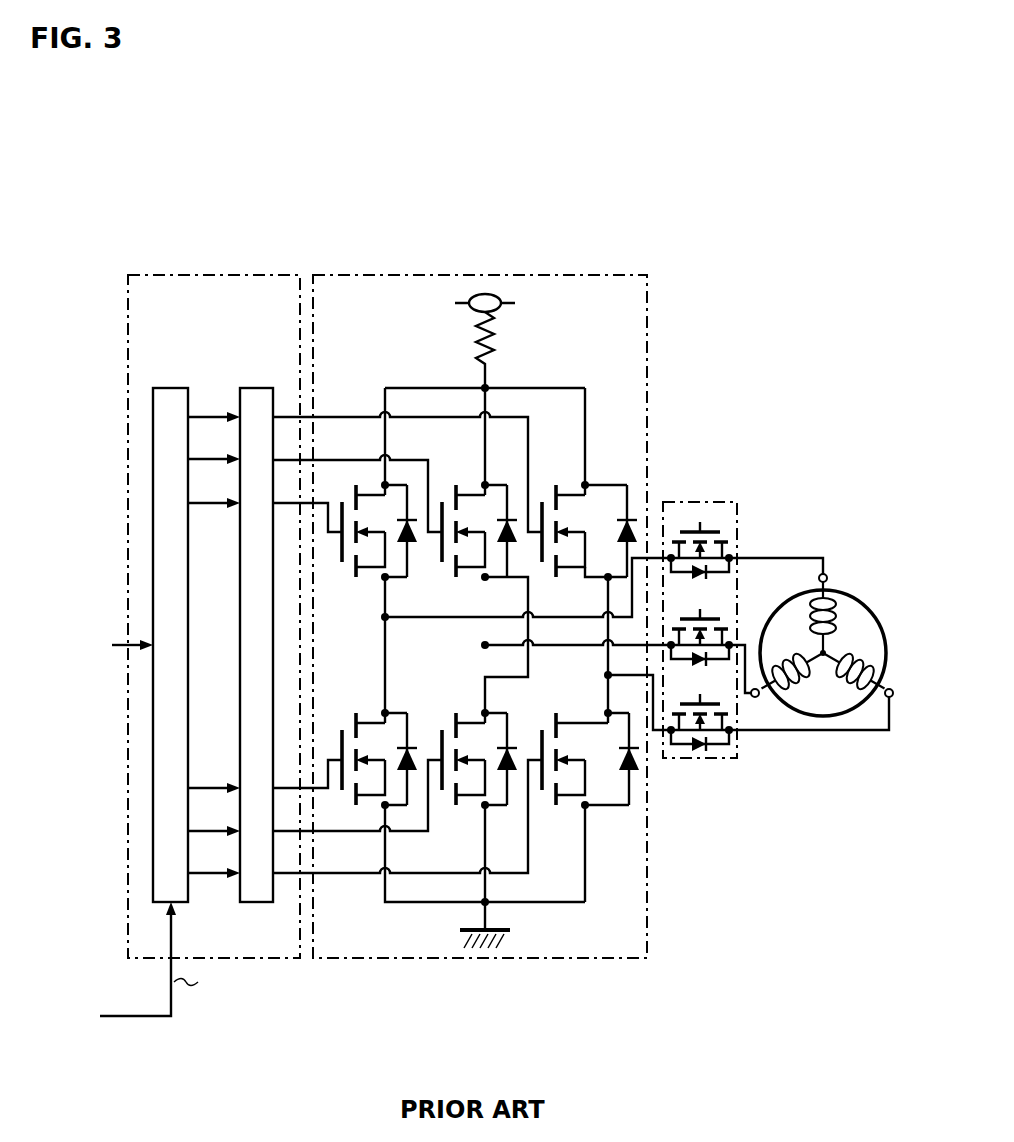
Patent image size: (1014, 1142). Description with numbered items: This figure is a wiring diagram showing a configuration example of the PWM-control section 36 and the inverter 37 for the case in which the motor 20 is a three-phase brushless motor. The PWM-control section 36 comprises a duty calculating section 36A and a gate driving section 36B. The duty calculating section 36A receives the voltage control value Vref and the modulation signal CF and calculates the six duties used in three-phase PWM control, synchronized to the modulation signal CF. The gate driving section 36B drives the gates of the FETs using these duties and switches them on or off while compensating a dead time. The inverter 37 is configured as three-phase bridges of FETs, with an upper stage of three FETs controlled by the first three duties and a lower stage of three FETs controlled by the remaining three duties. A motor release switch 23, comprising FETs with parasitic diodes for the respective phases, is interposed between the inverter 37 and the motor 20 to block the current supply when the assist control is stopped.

The PWM-control section 36 is at (265, 275).
The duty calculating section 36A is at (170, 388).
The gate driving section 36B is at (257, 388).
The inverter 37 is at (618, 275).
The motor release switch 23 is at (708, 502).
The motor 20 is at (857, 580).